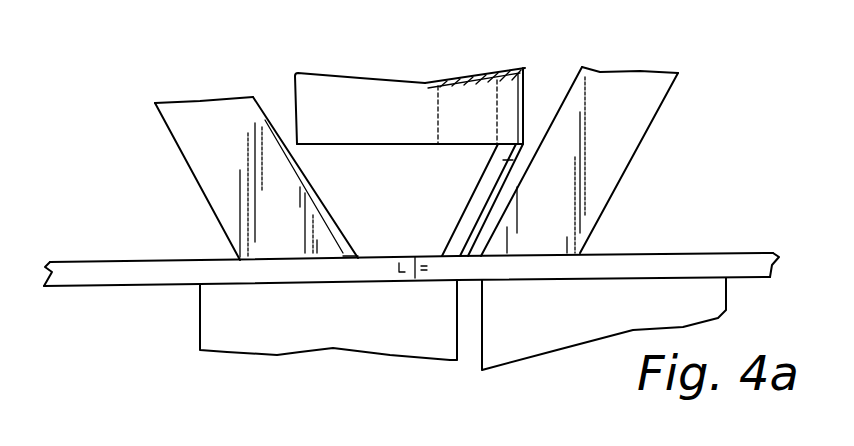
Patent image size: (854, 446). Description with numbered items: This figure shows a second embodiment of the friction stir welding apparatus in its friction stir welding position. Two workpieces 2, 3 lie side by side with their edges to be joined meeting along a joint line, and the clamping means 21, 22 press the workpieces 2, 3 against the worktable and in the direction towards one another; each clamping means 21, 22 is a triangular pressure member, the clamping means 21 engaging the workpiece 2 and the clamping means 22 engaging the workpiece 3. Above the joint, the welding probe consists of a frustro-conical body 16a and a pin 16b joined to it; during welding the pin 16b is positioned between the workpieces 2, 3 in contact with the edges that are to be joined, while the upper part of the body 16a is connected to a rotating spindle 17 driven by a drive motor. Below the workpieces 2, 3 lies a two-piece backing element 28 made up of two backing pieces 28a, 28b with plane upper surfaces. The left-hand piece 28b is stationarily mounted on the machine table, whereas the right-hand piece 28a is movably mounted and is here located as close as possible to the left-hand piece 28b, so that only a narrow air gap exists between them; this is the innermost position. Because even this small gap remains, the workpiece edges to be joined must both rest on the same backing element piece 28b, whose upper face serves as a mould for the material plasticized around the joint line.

The workpiece 2 is at (735, 263).
The workpiece 3 is at (71, 270).
The rotating spindle 17 is at (328, 95).
The frustro-conical body 16a is at (527, 142).
The pin 16b is at (430, 265).
The clamping means 21 is at (643, 108).
The clamping means 22 is at (217, 177).
The two-piece backing element 28 is at (468, 362).
The right-hand backing element piece 28a is at (558, 340).
The left-hand backing element piece 28b is at (323, 327).